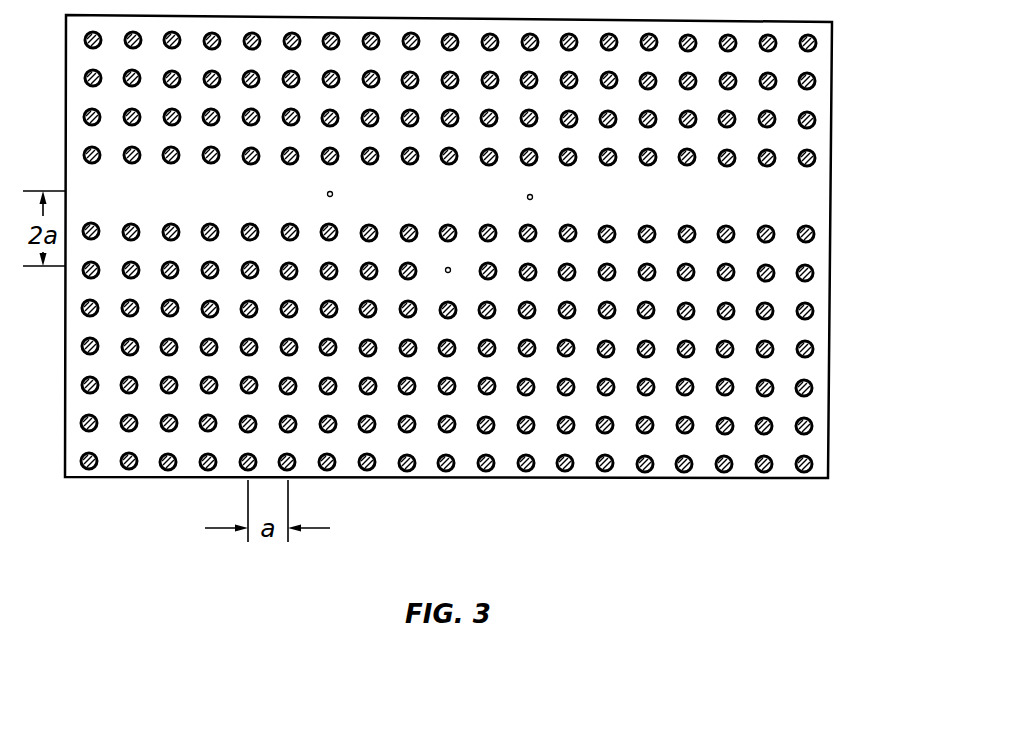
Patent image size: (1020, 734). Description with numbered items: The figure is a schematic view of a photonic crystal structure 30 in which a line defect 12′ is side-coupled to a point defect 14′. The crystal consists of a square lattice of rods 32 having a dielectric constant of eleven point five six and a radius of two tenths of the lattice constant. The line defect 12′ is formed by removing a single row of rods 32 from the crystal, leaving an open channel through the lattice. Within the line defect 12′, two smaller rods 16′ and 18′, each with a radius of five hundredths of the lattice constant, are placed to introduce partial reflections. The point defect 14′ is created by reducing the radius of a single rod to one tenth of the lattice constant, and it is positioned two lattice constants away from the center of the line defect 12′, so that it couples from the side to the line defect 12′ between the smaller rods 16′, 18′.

The line defect 12′ is at (824, 190).
The point defect 14′ is at (451, 274).
The smaller rod 16′ is at (327, 193).
The smaller rod 18′ is at (533, 196).
The photonic crystal structure 30 is at (375, 545).
The rods 32 is at (686, 431).